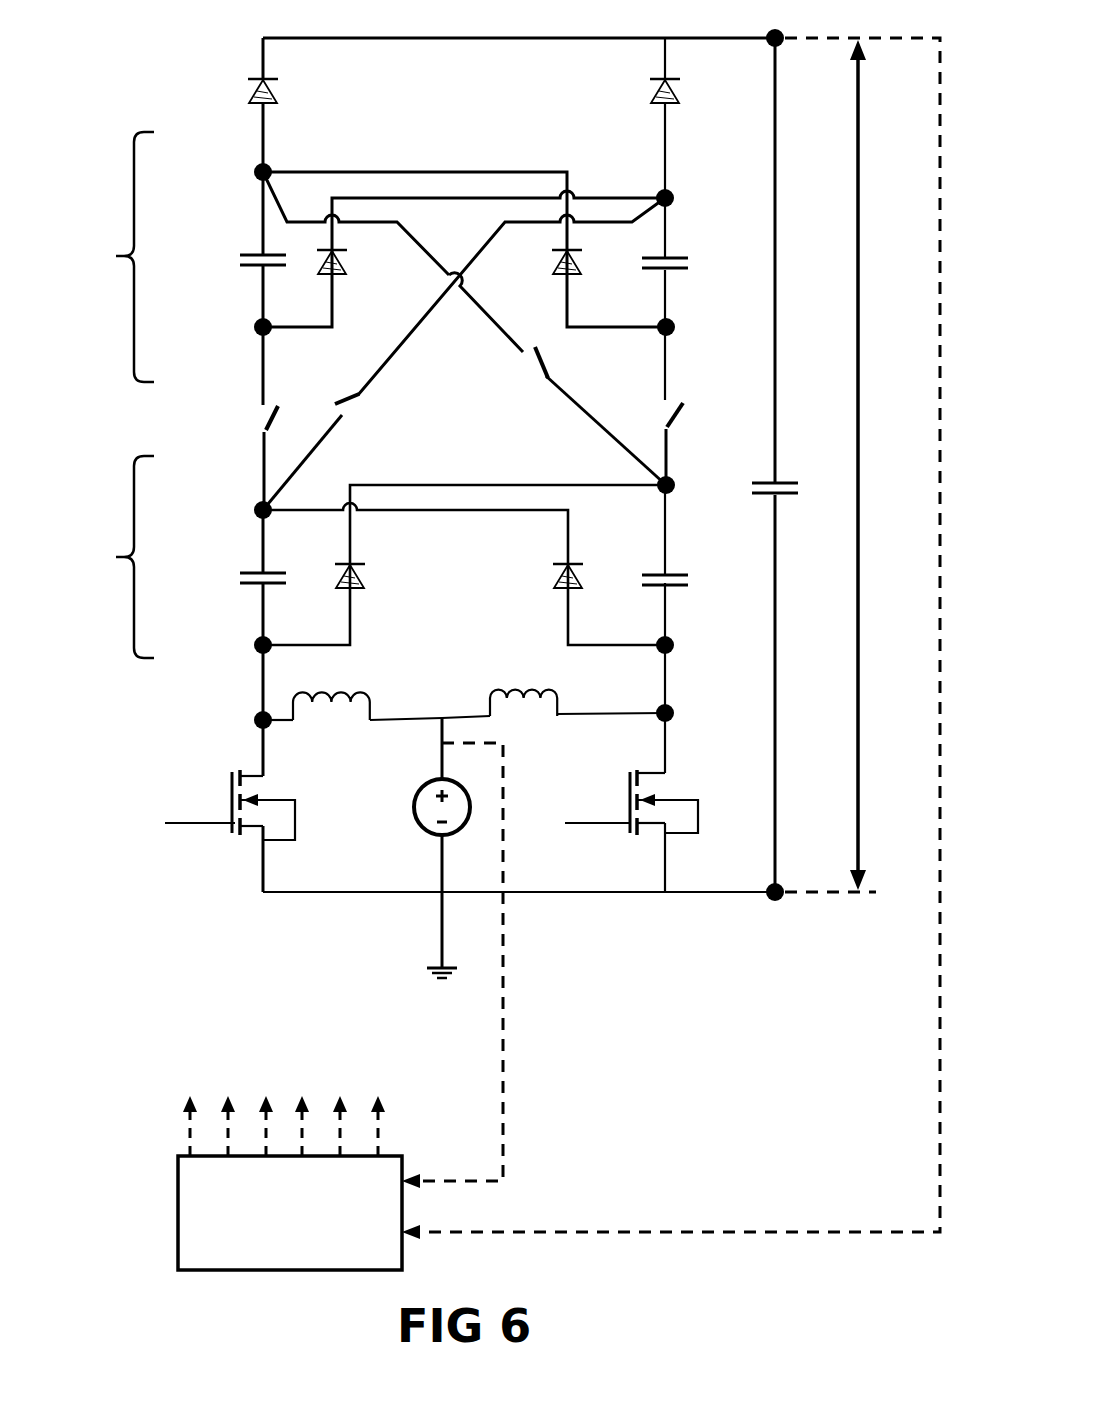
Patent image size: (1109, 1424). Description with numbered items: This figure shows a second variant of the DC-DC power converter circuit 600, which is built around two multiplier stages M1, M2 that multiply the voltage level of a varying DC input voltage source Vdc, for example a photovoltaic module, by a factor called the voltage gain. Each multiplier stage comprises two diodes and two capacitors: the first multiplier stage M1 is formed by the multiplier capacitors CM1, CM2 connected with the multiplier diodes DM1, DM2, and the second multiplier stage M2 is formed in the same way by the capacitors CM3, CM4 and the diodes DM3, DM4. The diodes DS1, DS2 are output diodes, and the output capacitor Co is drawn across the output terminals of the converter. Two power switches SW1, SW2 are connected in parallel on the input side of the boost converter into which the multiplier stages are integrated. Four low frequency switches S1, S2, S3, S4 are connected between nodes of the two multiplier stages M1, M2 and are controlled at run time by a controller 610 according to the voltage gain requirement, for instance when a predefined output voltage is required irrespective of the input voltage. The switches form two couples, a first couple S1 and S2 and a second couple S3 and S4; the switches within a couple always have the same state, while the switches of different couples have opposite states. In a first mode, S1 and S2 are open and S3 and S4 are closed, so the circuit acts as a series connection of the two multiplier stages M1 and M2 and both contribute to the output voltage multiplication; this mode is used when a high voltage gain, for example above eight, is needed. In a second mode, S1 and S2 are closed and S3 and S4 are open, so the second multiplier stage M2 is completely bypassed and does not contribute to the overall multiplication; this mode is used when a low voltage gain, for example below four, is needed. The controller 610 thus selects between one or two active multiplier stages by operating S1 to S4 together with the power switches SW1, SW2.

The multi-level power converter circuit 600 is at (110, 1286).
The controller 610 is at (190, 1181).
The output diode DS1 is at (290, 94).
The output diode DS2 is at (692, 94).
The multiplier diode DM1 is at (380, 578).
The multiplier diode DM2 is at (544, 578).
The module diode 3 DM3 is at (359, 270).
The module diode 4 DM4 is at (539, 267).
The multiplier capacitor CM1 is at (235, 581).
The multiplier capacitor CM2 is at (689, 581).
The module capacitor 3 CM3 is at (235, 258).
The module capacitor 4 CM4 is at (692, 260).
The output capacitor Co is at (787, 509).
The switch S1 is at (361, 416).
The switch S2 is at (516, 376).
The switch S3 is at (244, 416).
The switch S4 is at (697, 413).
The power switch SW1 is at (230, 817).
The power switch SW2 is at (631, 817).
The DC voltage source Vdc is at (417, 848).
The first multiplier stage M1 is at (105, 557).
The second multiplier stage M2 is at (99, 257).